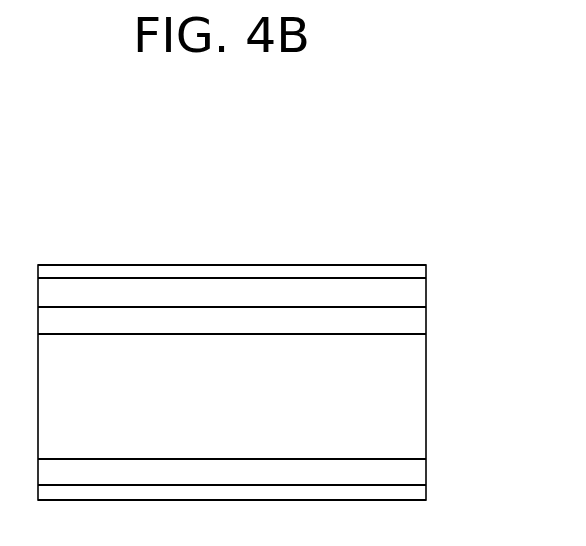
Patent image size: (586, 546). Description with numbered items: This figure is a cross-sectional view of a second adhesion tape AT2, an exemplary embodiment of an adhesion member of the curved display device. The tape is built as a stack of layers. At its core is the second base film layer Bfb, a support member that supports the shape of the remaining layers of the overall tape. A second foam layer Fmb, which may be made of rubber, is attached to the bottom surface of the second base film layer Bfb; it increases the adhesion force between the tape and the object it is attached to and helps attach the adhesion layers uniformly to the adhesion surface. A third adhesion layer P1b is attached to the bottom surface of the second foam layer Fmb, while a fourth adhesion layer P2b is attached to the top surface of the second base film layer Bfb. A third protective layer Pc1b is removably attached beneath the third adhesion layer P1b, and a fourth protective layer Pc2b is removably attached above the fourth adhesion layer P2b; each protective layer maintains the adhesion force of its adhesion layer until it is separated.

The second adhesion tape AT2 is at (380, 223).
The fourth protective layer Pc2b is at (417, 271).
The fourth adhesion layer P2b is at (417, 294).
The second base film layer Bfb is at (417, 320).
The second foam layer Fmb is at (417, 395).
The third adhesion layer P1b is at (417, 471).
The third protective layer Pc1b is at (417, 492).